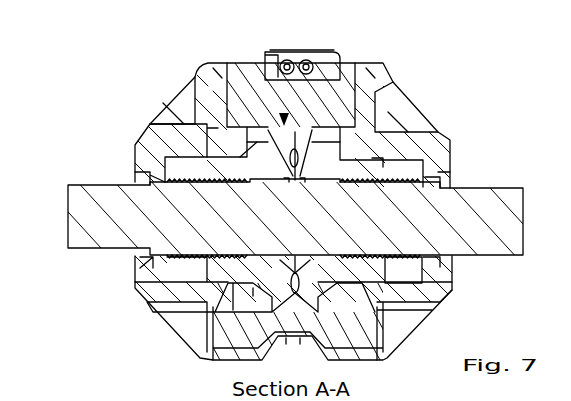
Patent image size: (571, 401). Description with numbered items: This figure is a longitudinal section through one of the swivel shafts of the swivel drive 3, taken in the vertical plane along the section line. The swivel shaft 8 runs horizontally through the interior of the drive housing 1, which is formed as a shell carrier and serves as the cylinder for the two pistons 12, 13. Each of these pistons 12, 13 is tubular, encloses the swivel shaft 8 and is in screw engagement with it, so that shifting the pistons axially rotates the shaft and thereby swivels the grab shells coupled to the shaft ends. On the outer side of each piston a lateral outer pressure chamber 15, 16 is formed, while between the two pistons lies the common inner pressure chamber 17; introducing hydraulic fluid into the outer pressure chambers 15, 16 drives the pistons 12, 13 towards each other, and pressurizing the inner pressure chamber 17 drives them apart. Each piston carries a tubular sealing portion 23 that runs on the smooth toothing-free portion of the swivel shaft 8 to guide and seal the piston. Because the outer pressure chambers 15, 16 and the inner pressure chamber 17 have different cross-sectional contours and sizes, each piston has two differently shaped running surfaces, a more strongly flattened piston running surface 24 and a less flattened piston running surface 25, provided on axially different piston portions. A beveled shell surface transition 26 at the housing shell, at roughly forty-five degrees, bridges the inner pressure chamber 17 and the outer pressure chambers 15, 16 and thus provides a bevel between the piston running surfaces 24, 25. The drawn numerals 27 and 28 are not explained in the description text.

The drive housing 1 is at (445, 142).
The swivel drive 3 is at (440, 100).
The swivel shaft 8 is at (513, 193).
The piston 12 is at (385, 350).
The piston 13 is at (207, 313).
The pressure chamber 15 is at (160, 270).
The pressure chamber 16 is at (410, 272).
The common pressure chamber 17 is at (312, 130).
The sealing portion 23 is at (290, 176).
The more strongly flattened piston running surface 24 is at (195, 77).
The less flattened piston running surface 25 is at (281, 113).
The beveled shell surface transition 26 is at (393, 83).
The recess 27 is at (228, 148).
The upper flange 28 is at (151, 122).